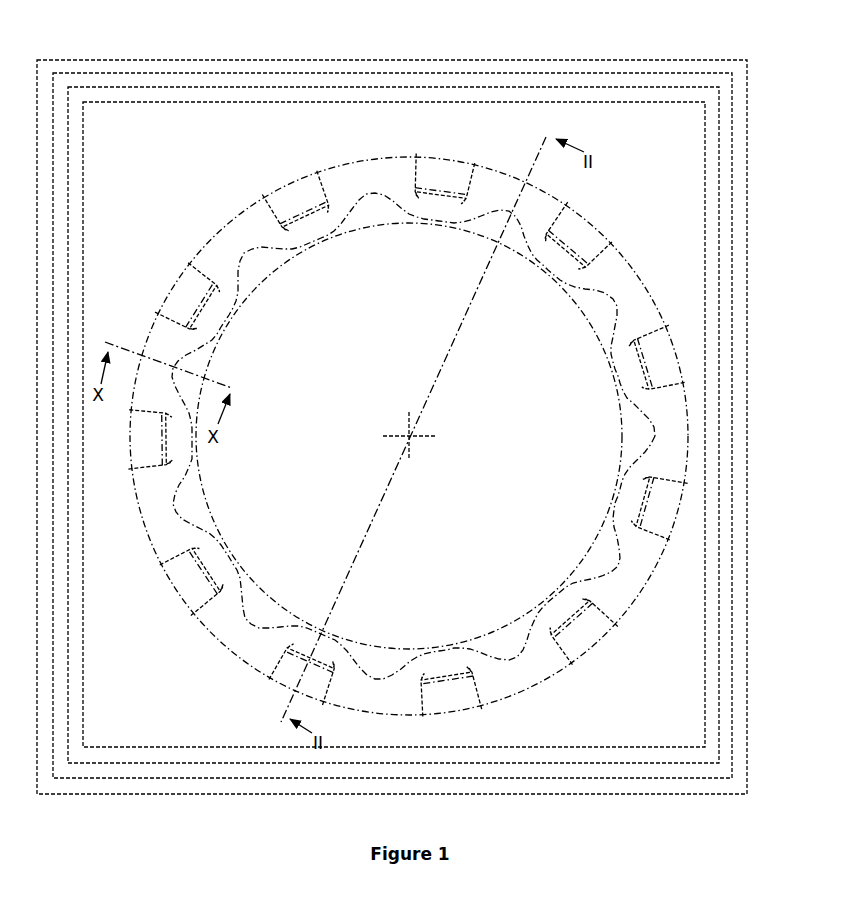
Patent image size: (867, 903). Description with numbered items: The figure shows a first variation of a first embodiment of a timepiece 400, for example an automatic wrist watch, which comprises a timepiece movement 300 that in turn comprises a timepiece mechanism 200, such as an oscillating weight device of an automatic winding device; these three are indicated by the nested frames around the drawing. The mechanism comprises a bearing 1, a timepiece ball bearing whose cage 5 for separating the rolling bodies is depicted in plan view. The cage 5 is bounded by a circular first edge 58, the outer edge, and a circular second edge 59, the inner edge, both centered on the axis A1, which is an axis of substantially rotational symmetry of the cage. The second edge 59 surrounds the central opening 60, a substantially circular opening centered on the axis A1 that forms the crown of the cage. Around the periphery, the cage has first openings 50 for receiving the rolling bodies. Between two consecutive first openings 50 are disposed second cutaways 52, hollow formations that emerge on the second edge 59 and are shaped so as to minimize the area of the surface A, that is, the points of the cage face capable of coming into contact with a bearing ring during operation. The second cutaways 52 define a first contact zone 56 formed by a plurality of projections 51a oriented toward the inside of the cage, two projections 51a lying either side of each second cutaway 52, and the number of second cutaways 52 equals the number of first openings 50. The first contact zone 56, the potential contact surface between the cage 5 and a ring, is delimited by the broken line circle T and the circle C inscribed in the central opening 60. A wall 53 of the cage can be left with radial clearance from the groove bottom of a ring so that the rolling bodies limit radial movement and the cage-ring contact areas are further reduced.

The bearing 1 is at (470, 99).
The timepiece mechanism 200 is at (538, 85).
The timepiece movement 300 is at (588, 71).
The timepiece 400 is at (636, 58).
The cage 5 is at (356, 168).
The first openings 50 is at (289, 192).
The projections 51a is at (220, 318).
The second cutaways 52 is at (258, 264).
The wall of the cage 53 is at (302, 251).
The first contact zone 56 is at (622, 342).
The first edge 58 is at (226, 222).
The second edge 59 is at (231, 548).
The central opening 60 is at (442, 465).
The surface A is at (438, 213).
The axis A1 is at (406, 434).
The circle C is at (566, 301).
The broken line circle T is at (564, 250).